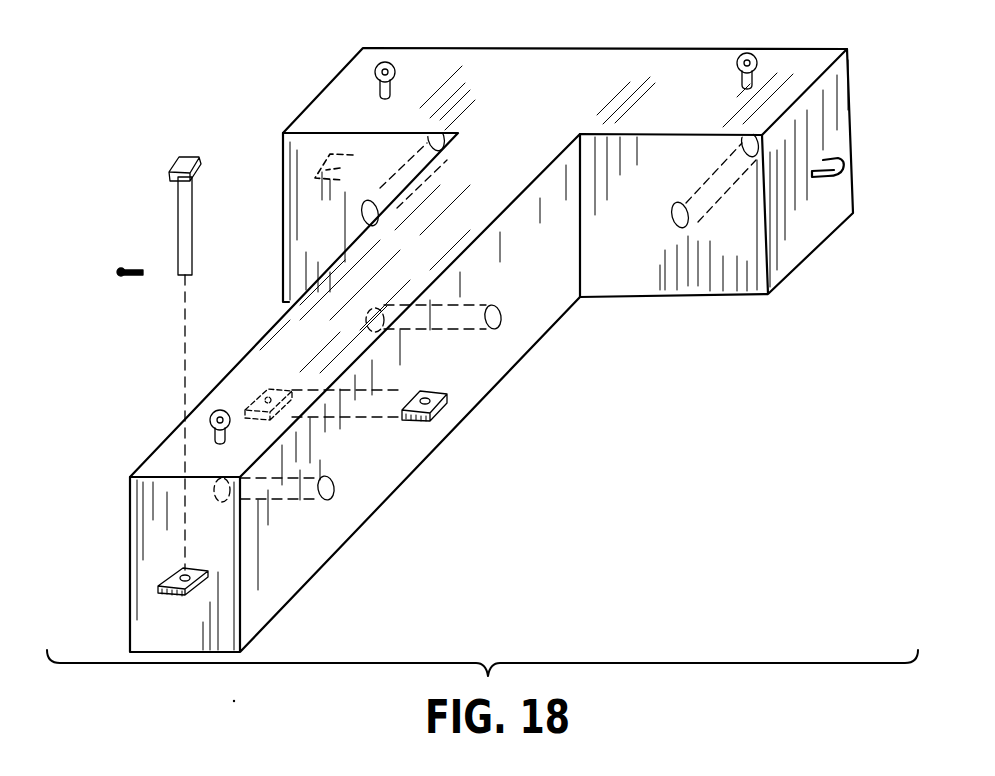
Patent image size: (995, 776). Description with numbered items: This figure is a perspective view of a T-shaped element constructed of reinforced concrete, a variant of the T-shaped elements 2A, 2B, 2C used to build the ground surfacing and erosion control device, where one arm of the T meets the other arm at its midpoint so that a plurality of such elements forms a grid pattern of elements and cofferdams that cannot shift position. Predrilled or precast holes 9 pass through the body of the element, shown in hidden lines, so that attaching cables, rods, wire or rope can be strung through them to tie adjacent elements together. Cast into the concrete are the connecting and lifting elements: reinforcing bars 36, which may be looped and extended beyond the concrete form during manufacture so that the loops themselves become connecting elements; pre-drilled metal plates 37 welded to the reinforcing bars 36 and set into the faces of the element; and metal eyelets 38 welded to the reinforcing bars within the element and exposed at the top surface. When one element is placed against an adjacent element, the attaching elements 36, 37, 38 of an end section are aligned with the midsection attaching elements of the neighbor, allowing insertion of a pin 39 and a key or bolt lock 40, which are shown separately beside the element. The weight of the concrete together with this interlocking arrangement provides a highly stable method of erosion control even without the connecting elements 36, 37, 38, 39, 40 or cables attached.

The wooden T-shaped element 2A is at (500, 350).
The metal, plastic, fiberglass or composite T-shaped element 2B is at (500, 350).
The metal, plastic, fiberglass or composite T-shaped element 2C is at (705, 297).
The predrilled hole 9 is at (345, 553).
The reinforcing bar 36 is at (312, 172).
The pre-drilled metal plate 37 is at (447, 405).
The metal eyelet 38 is at (380, 64).
The pin 39 is at (192, 248).
The key or bolt lock 40 is at (127, 268).